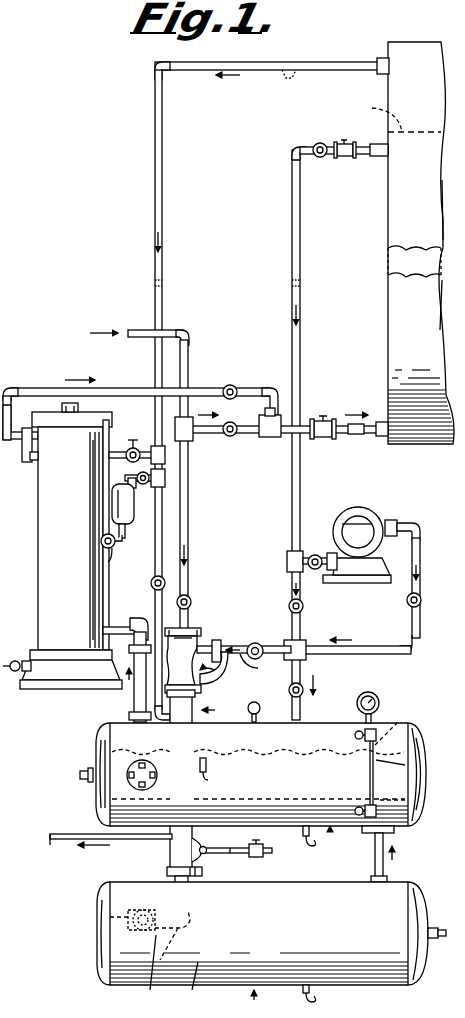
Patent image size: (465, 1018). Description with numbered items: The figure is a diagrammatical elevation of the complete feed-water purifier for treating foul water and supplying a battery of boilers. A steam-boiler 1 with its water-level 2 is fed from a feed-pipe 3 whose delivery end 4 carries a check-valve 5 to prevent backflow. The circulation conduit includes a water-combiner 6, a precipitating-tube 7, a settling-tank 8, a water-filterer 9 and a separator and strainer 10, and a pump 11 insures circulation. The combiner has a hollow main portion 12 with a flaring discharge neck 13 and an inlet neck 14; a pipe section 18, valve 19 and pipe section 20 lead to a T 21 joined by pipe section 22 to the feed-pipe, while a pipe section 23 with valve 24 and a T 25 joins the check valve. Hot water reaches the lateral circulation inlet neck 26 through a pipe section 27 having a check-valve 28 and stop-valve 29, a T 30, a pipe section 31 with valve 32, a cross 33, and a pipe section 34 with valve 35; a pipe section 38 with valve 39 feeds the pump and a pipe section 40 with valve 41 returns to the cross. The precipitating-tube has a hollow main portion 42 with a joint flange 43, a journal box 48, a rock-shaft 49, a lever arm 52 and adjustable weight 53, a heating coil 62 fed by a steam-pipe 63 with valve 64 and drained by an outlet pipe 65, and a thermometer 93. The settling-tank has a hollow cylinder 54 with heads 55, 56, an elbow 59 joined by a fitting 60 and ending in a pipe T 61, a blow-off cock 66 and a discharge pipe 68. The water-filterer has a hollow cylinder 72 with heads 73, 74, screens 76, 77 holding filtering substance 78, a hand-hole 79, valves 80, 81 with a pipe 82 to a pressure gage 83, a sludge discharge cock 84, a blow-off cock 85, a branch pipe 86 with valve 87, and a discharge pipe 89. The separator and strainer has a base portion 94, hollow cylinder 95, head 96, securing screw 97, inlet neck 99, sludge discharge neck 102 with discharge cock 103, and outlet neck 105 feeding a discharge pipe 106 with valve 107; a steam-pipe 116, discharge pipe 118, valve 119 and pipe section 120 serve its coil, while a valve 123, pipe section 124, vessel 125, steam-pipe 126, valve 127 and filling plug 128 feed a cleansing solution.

The steam-boiler 1 is at (396, 240).
The water-level 2 is at (379, 114).
The feed-pipe 3 is at (136, 329).
The delivery end of the feed line 4 is at (366, 435).
The check-valve 5 is at (322, 438).
The water-combiner 6 is at (210, 675).
The precipitating-tube 7 is at (213, 708).
The settling-tank 8 is at (248, 1003).
The water-filterer 9 is at (392, 552).
The separator and strainer 10 is at (36, 551).
The pump 11 is at (362, 505).
The hollow main portion 12 is at (186, 648).
The flaring discharge neck 13 is at (240, 668).
The inlet neck 14 is at (193, 636).
The pipe section 18 is at (198, 627).
The valve 19 is at (188, 597).
The pipe section 20 is at (189, 522).
The T 21 is at (194, 438).
The pipe section 22 is at (190, 355).
The pipe section 23 is at (225, 436).
The valve 24 is at (236, 436).
The T 25 is at (262, 420).
The lateral circulation inlet neck 26 is at (218, 646).
The pipe section 27 is at (370, 143).
The check-valve 28 is at (344, 158).
The stop-valve 29 is at (319, 143).
The T 30 is at (289, 555).
The pipe section 31 is at (303, 604).
The valve 32 is at (292, 597).
The cross 33 is at (304, 641).
The pipe section 34 is at (254, 668).
The valve 35 is at (259, 643).
The pipe section 38 is at (314, 568).
The valve 39 is at (326, 555).
The pipe section 40 is at (407, 596).
The valve 41 is at (422, 597).
The hollow main portion 42 is at (178, 737).
The joint flange 43 is at (167, 869).
The journal box 48 is at (215, 847).
The rock-shaft 49 is at (198, 849).
The lever arm 52 is at (235, 853).
The weight 53 is at (262, 856).
The hollow cylinder 54 is at (191, 987).
The head 55 is at (98, 938).
The head 56 is at (418, 970).
The elbow 59 is at (147, 973).
The fitting 60 is at (167, 882).
The pipe T 61 is at (128, 914).
The heating coil 62 is at (181, 779).
The steam-pipe 63 is at (292, 112).
The valve 64 is at (150, 582).
The outlet pipe 65 is at (107, 826).
The blow-off cock 66 is at (316, 996).
The discharge pipe 68 is at (374, 854).
The hollow cylinder 72 is at (396, 829).
The head 73 is at (109, 810).
The head 74 is at (419, 806).
The screen 76 is at (412, 794).
The screen 77 is at (391, 756).
The filtering substance 78 is at (243, 712).
The hand-hole 79 is at (128, 770).
The valve 80 is at (357, 818).
The valve 81 is at (357, 730).
The pipe 82 is at (406, 765).
The pressure gage 83 is at (378, 698).
The sludge discharge cock 84 is at (306, 848).
The blow-off cock 85 is at (245, 711).
The branch pipe 86 is at (296, 683).
The valve 87 is at (304, 683).
The discharge pipe 89 is at (134, 702).
The thermometer 93 is at (212, 766).
The base portion 94 is at (60, 675).
The hollow cylinder 95 is at (50, 582).
The head 96 is at (38, 402).
The securing screw 97 is at (80, 402).
The inlet neck 99 is at (138, 618).
The sludge discharge neck 102 is at (25, 660).
The discharge cock 103 is at (453, 210).
The outlet neck 105 is at (19, 445).
The discharge pipe 106 is at (43, 386).
The valve 107 is at (211, 404).
The steam-pipe 116 is at (104, 443).
The discharge pipe 118 is at (120, 450).
The valve 119 is at (108, 460).
The pipe section 120 is at (142, 441).
The valve 123 is at (110, 554).
The pipe section 124 is at (125, 543).
The vessel 125 is at (112, 508).
The steam-pipe 126 is at (125, 478).
The valve 127 is at (160, 476).
The filling plug 128 is at (136, 486).